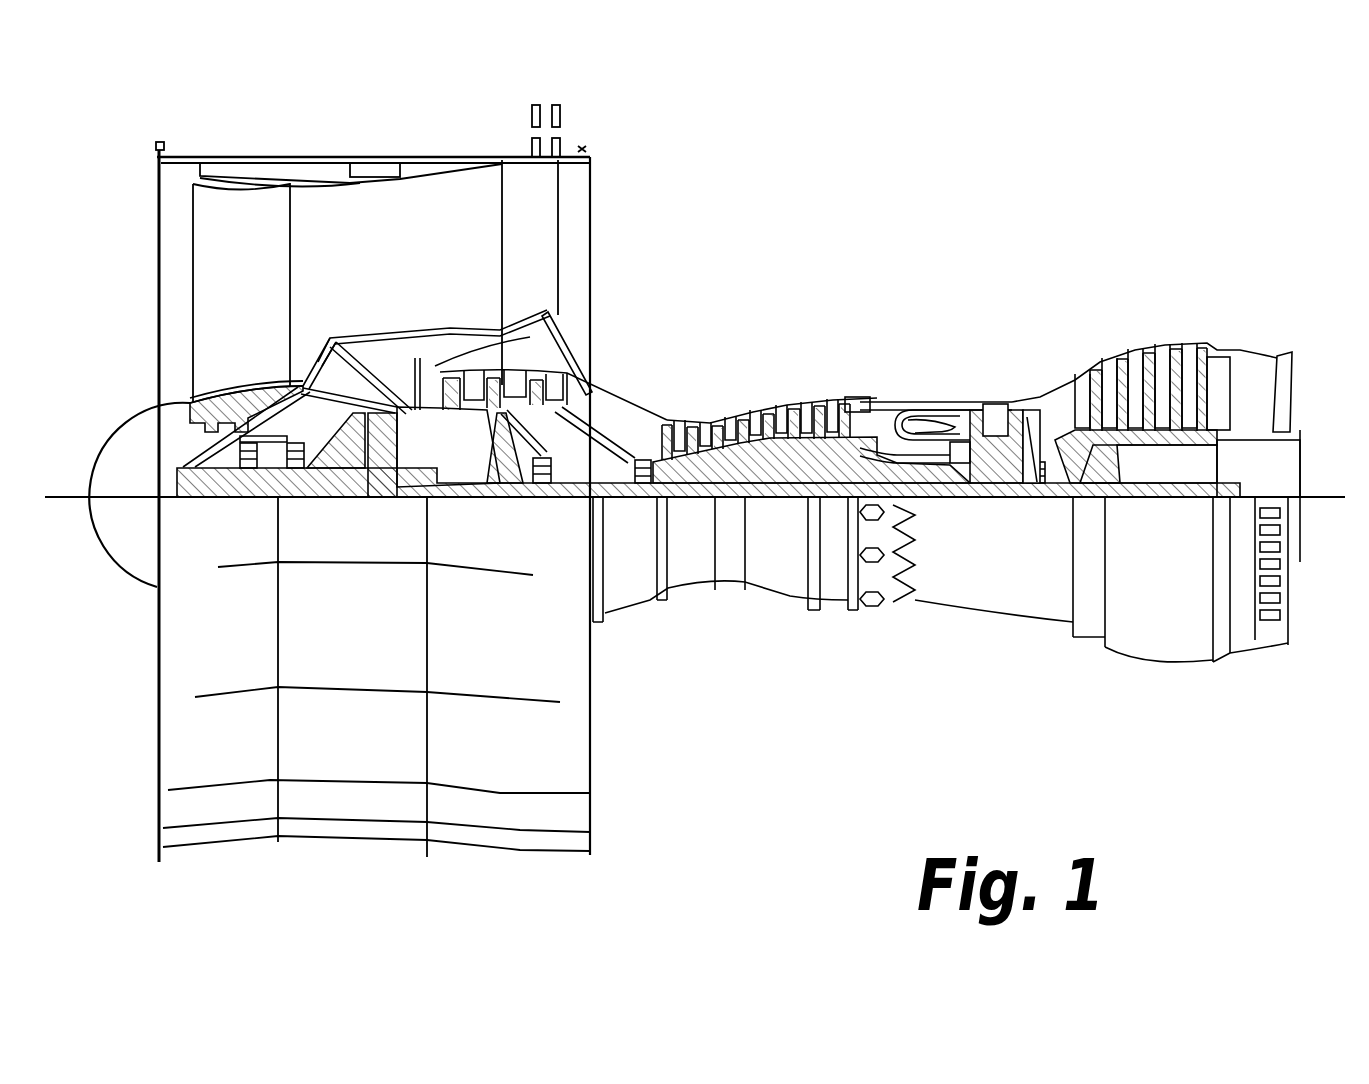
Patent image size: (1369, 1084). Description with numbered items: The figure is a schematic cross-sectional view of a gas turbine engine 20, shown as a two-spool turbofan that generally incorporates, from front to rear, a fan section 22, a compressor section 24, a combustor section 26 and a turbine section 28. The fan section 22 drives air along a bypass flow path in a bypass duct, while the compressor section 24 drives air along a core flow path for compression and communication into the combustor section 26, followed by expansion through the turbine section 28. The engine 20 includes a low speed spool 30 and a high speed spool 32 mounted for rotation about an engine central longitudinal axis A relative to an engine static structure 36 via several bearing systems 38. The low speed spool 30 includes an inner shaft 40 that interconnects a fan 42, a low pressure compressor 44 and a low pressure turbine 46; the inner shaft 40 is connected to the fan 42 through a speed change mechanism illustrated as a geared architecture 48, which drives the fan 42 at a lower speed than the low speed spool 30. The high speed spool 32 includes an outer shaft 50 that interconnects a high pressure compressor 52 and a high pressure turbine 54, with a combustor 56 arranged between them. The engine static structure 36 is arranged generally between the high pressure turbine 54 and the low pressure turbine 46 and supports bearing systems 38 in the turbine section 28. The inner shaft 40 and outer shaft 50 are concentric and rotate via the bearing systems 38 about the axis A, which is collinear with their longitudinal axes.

The gas turbine engine 20 is at (940, 200).
The fan section 22 is at (412, 118).
The compressor section 24 is at (895, 295).
The combustor section 26 is at (965, 295).
The turbine section 28 is at (977, 295).
The low speed spool 30 is at (792, 505).
The high speed spool 32 is at (830, 460).
The engine static structure 36 is at (832, 605).
The bearing systems 38 is at (253, 470).
The inner shaft 40 is at (658, 605).
The fan 42 is at (249, 319).
The low pressure compressor 44 is at (572, 331).
The low pressure turbine 46 is at (1150, 362).
The geared architecture 48 is at (389, 470).
The outer shaft 50 is at (928, 470).
The high pressure compressor 52 is at (752, 460).
The high pressure turbine 54 is at (995, 404).
The combustor 56 is at (917, 427).
The engine central longitudinal axis A is at (1345, 497).